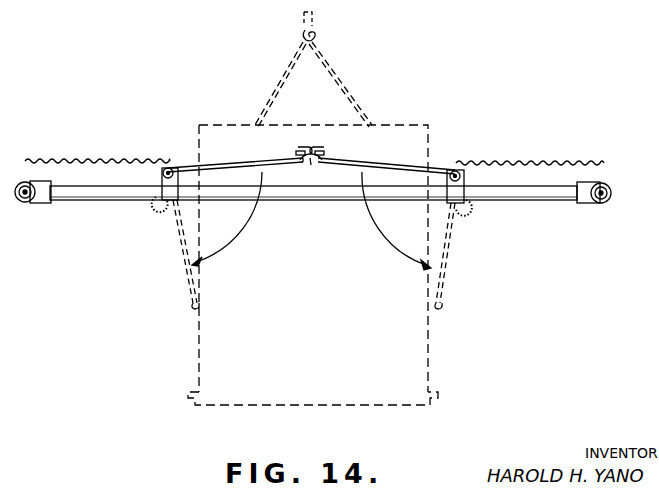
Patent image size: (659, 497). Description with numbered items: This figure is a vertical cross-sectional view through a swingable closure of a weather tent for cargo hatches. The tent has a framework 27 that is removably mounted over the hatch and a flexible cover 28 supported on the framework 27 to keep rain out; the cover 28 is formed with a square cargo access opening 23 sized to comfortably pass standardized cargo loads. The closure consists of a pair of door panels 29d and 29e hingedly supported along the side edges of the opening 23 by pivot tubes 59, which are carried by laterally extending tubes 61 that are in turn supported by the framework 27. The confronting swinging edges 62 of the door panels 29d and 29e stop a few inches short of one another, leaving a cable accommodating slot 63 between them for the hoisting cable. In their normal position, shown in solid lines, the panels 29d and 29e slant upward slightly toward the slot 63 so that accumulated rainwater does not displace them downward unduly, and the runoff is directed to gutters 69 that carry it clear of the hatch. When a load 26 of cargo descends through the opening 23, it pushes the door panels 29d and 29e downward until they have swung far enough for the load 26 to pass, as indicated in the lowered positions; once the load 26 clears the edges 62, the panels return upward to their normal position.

The cargo access opening 23 is at (175, 162).
The load 26 is at (431, 350).
The framework 27 is at (612, 190).
The flexible cover 28 is at (88, 158).
The door panel 29d is at (265, 152).
The door panel 29e is at (383, 153).
The pivot tube 59 is at (163, 171).
The laterally extending tube 61 is at (505, 197).
The swinging edge 62 is at (310, 152).
The cable accommodating slot 63 is at (318, 165).
The gutter 69 is at (152, 210).